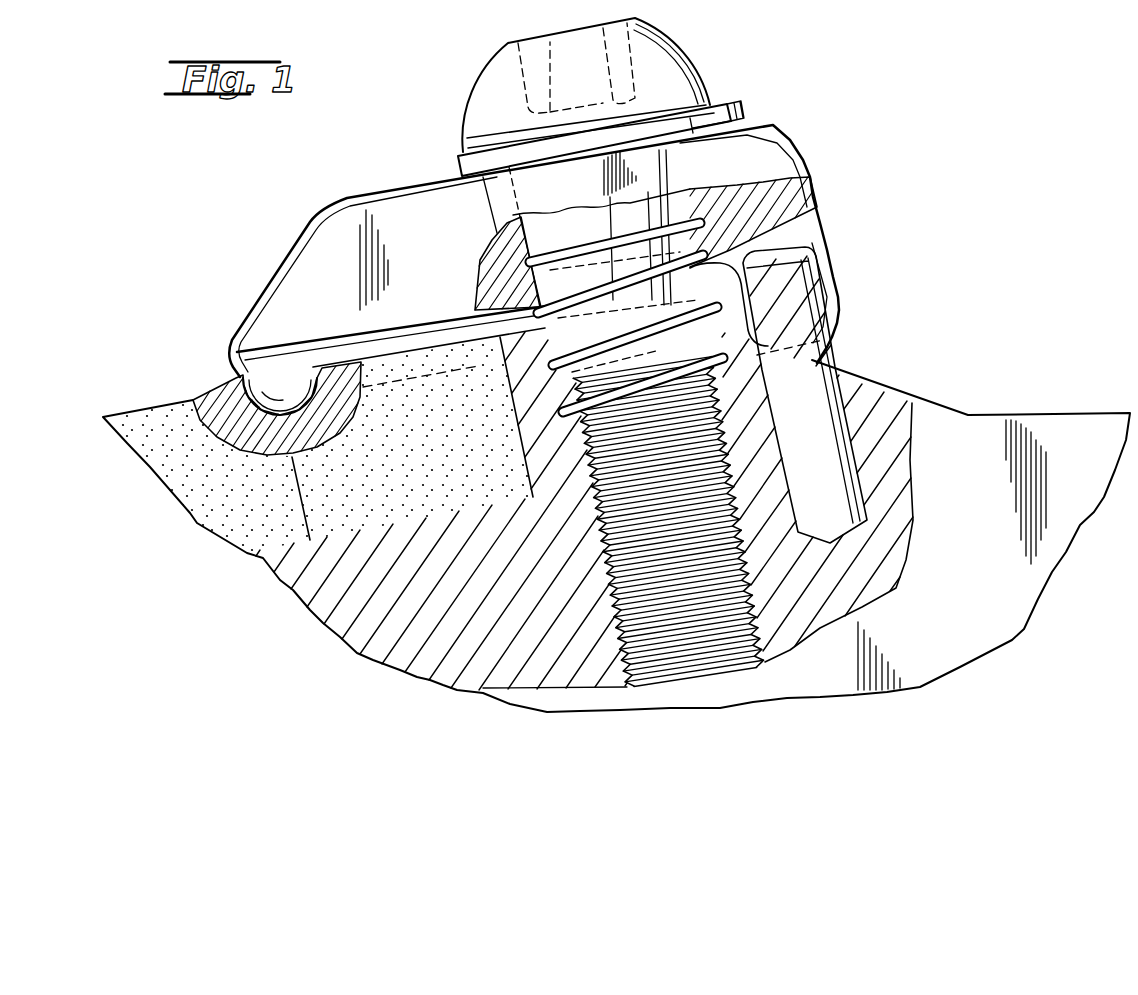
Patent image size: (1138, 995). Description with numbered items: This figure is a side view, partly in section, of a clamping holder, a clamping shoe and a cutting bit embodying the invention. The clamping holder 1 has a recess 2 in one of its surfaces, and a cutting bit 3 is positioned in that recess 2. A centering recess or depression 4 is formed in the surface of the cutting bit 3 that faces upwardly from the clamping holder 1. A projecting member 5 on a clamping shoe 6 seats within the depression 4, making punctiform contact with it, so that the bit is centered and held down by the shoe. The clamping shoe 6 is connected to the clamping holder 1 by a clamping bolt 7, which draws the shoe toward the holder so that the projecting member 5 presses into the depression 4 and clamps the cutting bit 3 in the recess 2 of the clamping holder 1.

The clamping holder 1 is at (983, 406).
The recess 2 is at (466, 507).
The cutting bit 3 is at (198, 530).
The centering recess or depression 4 is at (292, 398).
The projecting member 5 is at (310, 445).
The clamping shoe 6 is at (304, 224).
The clamping bolt 7 is at (678, 63).